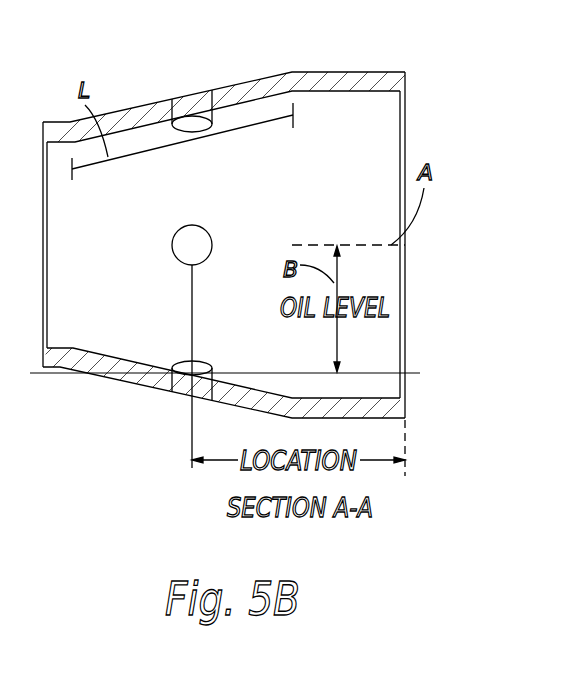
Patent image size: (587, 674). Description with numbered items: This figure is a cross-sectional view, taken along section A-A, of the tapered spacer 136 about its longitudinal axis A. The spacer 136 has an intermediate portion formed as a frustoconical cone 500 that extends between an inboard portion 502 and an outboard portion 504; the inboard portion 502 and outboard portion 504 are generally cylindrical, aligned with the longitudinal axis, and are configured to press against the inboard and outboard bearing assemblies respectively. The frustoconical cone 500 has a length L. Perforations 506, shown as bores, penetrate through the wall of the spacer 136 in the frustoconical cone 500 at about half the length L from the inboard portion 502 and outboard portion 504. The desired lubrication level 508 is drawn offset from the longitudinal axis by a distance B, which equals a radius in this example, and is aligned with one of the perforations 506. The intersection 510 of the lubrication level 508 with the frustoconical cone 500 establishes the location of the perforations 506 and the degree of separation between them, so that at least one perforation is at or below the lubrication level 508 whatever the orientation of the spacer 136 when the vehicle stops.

The spacer 136 is at (358, 72).
The frustoconical cone 500 is at (238, 90).
The inboard portion 502 is at (315, 80).
The outboard portion 504 is at (67, 360).
The perforations 506 is at (213, 243).
The lubrication level 508 is at (391, 372).
The intersection 510 is at (181, 392).